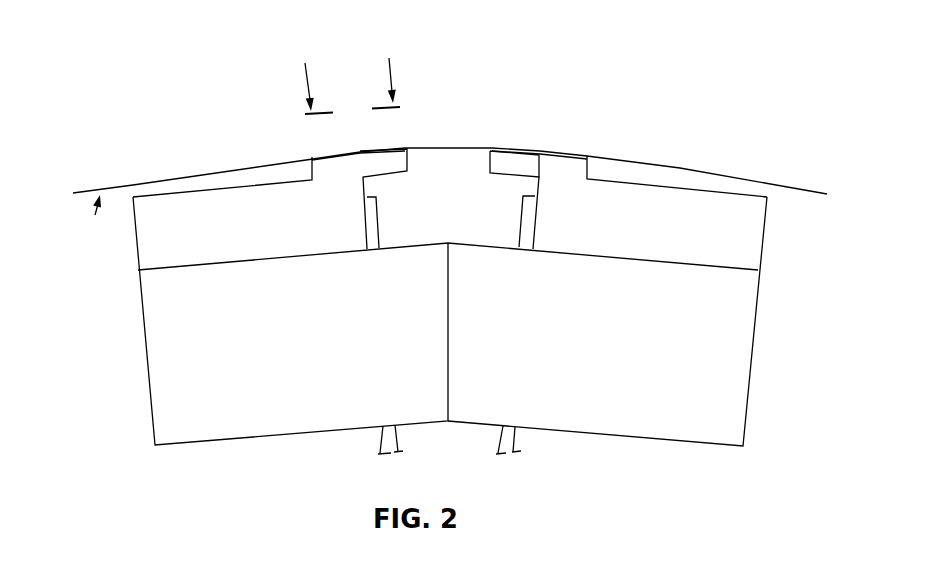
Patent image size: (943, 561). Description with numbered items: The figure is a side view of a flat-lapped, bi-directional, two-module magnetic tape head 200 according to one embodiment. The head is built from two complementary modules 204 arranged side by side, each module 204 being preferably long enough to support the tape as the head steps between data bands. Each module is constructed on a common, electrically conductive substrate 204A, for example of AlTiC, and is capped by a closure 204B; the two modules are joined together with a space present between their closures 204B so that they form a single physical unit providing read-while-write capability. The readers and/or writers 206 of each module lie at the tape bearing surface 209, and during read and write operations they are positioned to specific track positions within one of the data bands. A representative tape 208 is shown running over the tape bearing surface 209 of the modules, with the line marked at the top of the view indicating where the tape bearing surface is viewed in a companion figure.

The magnetic tape head 200 is at (180, 109).
The module 204 is at (133, 242).
The substrate 204A is at (195, 217).
The closure 204B is at (490, 158).
The readers and/or writers 206 is at (368, 142).
The tape 208 is at (679, 168).
The tape bearing surface 209 is at (308, 146).